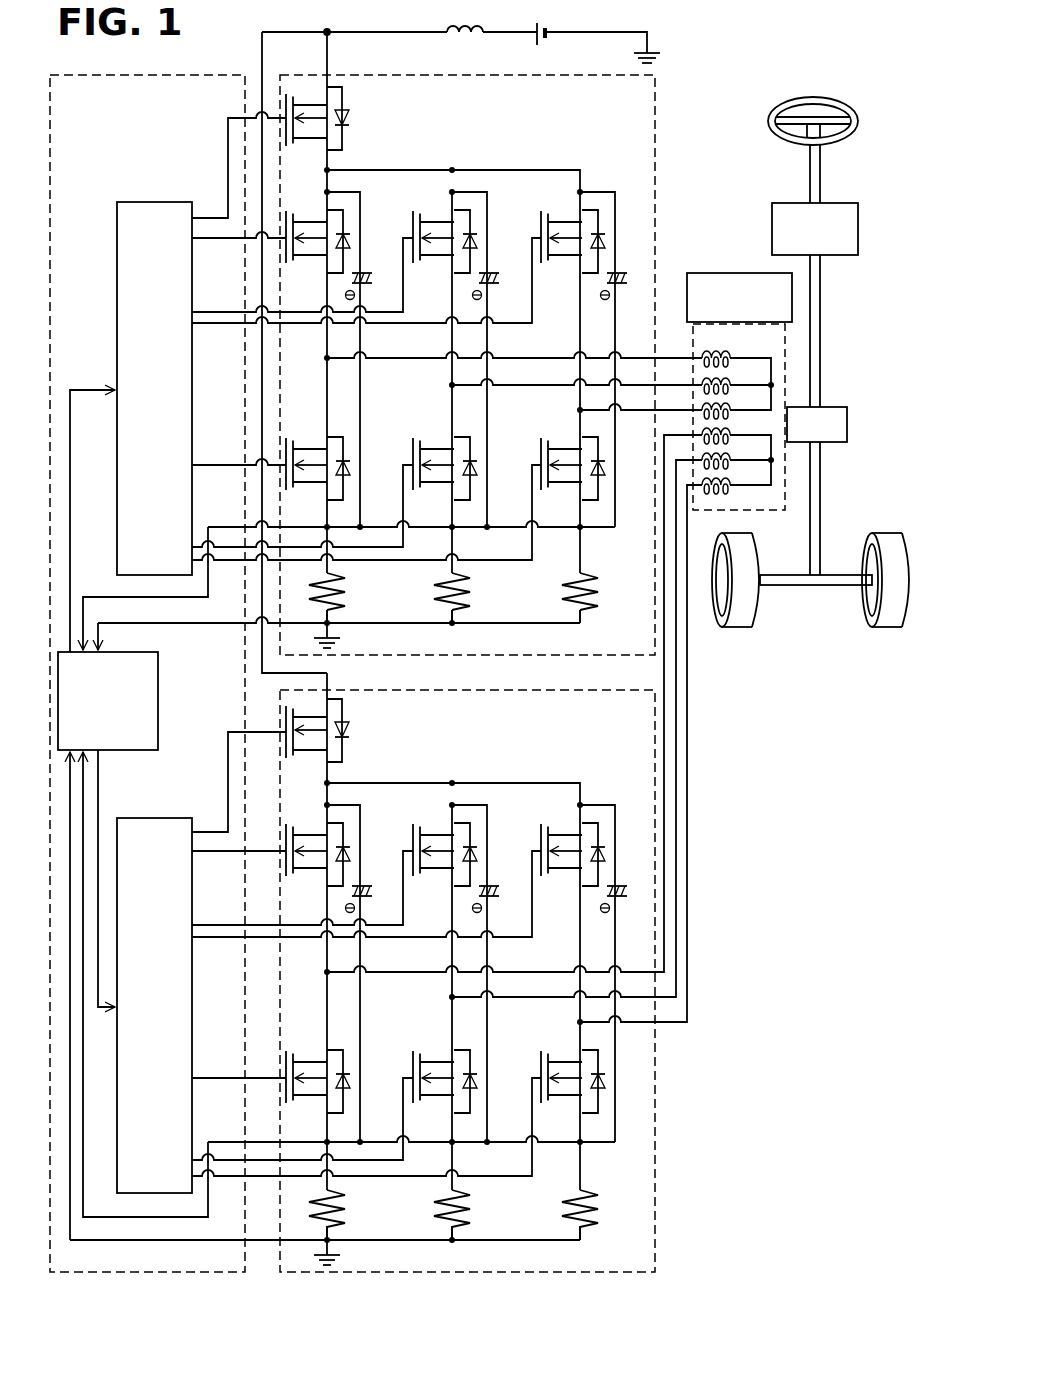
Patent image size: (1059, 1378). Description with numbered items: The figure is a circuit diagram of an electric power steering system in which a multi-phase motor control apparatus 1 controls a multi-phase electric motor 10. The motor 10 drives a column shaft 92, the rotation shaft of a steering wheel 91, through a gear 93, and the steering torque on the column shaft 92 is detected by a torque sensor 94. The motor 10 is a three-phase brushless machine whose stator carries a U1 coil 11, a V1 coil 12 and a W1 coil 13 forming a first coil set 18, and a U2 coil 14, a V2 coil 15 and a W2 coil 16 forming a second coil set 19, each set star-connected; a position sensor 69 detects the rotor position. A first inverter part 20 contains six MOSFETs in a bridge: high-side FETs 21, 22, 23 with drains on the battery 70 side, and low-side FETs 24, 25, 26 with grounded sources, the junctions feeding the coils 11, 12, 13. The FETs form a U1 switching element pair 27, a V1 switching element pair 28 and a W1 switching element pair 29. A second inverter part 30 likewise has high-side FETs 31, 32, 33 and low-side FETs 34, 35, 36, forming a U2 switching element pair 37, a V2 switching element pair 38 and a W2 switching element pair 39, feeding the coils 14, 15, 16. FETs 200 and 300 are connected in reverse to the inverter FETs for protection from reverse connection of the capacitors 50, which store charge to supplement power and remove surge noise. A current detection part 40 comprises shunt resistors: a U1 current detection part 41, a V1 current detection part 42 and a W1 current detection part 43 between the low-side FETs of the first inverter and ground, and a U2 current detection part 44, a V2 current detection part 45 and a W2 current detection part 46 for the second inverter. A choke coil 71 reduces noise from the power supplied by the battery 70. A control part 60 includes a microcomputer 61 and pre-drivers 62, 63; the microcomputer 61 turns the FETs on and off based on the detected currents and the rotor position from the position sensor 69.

The multi-phase motor control apparatus 1 is at (685, 80).
The multi-phase electric motor 10 is at (752, 444).
The U1 coil 11 is at (732, 354).
The V1 coil 12 is at (732, 381).
The W1 coil 13 is at (732, 406).
The U2 coil 14 is at (732, 431).
The V2 coil 15 is at (732, 456).
The W2 coil 16 is at (732, 481).
The first coil set 18 is at (776, 366).
The second coil set 19 is at (779, 478).
The first inverter part 20 is at (359, 75).
The U1 high-side FET 21 is at (344, 210).
The V1 high-side FET 22 is at (471, 210).
The W1 high-side FET 23 is at (599, 210).
The U1 low-side FET 24 is at (344, 437).
The V1 low-side FET 25 is at (471, 437).
The W1 low-side FET 26 is at (599, 437).
The U1 switching element pair 27 is at (335, 205).
The V1 switching element pair 28 is at (463, 205).
The W1 switching element pair 29 is at (590, 205).
The second inverter part 30 is at (360, 689).
The U2 high-side FET 31 is at (344, 823).
The V2 high-side FET 32 is at (471, 823).
The W2 high-side FET 33 is at (599, 823).
The U2 low-side FET 34 is at (344, 1050).
The V2 low-side FET 35 is at (471, 1050).
The W2 low-side FET 36 is at (599, 1050).
The U2 switching element pair 37 is at (335, 818).
The V2 switching element pair 38 is at (463, 818).
The W2 switching element pair 39 is at (591, 818).
The current detection part 40 is at (464, 605).
The U1 current detection part 41 is at (347, 590).
The V1 current detection part 42 is at (472, 590).
The W1 current detection part 43 is at (600, 590).
The U2 current detection part 44 is at (347, 1207).
The V2 current detection part 45 is at (472, 1207).
The W2 current detection part 46 is at (600, 1207).
The capacitor 50 is at (373, 272).
The control part 60 is at (133, 73).
The microcomputer 61 is at (160, 675).
The pre-driver 62 is at (157, 201).
The pre-driver 63 is at (157, 817).
The position sensor 69 is at (730, 272).
The battery 70 is at (548, 28).
The choke coil 71 is at (470, 25).
The steering wheel 91 is at (813, 96).
The column shaft 92 is at (823, 330).
The gear 93 is at (848, 418).
The torque sensor 94 is at (860, 209).
The FET 200 is at (344, 95).
The FET 300 is at (344, 706).